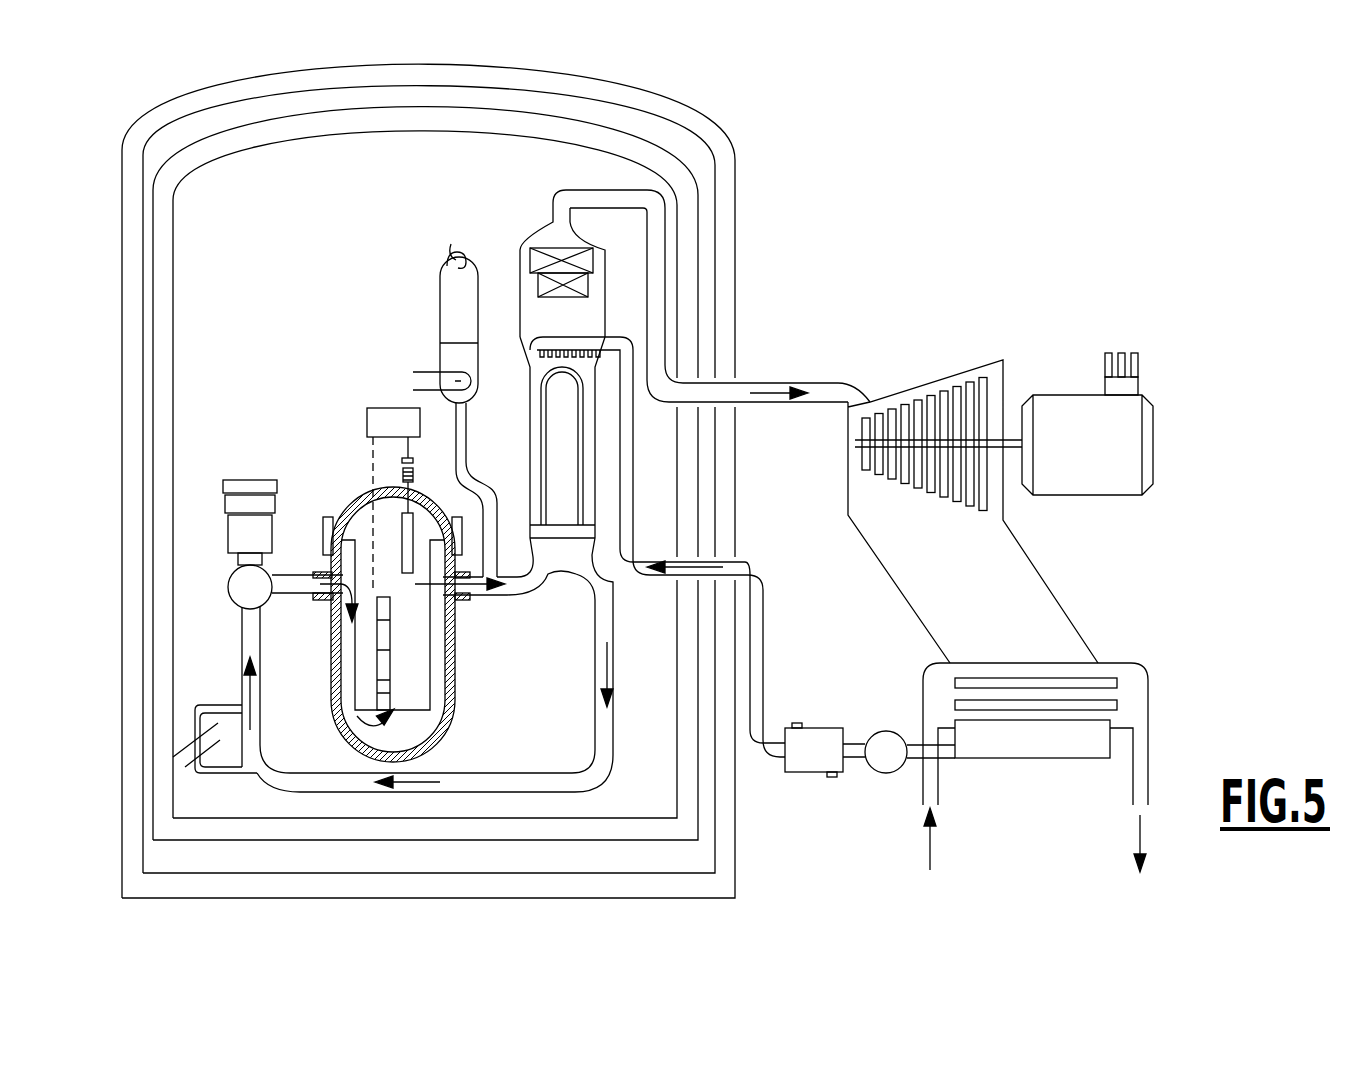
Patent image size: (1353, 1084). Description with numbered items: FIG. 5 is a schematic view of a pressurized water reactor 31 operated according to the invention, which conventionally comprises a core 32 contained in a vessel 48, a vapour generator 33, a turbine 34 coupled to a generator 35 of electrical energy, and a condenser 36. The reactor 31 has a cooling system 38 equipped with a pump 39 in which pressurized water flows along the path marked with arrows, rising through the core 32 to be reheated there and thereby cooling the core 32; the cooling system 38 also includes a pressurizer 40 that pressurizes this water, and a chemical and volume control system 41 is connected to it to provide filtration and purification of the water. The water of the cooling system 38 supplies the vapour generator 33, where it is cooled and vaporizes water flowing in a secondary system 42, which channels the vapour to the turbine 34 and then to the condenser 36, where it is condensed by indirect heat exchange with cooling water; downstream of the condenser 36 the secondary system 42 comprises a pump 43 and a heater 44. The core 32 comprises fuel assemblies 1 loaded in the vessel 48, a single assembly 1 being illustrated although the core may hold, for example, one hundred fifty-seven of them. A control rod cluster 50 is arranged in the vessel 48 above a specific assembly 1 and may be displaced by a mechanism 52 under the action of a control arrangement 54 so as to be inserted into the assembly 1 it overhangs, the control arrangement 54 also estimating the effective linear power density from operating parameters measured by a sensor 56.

The fuel assembly 1 is at (338, 651).
The pressurized water reactor 31 is at (768, 160).
The core 32 is at (453, 628).
The vapour generator 33 is at (527, 215).
The turbine 34 is at (962, 365).
The generator 35 is at (1158, 452).
The condenser 36 is at (1072, 607).
The cooling system 38 is at (407, 805).
The pump 39 is at (283, 512).
The pressurizer 40 is at (432, 303).
The chemical and volume control system 41 is at (186, 730).
The secondary system 42 is at (793, 378).
The pump 43 is at (880, 778).
The heater 44 is at (822, 722).
The vessel 48 is at (467, 717).
The control rod cluster 50 is at (420, 537).
The mechanism 52 is at (392, 475).
The control arrangement 54 is at (392, 412).
The sensor 56 is at (385, 596).